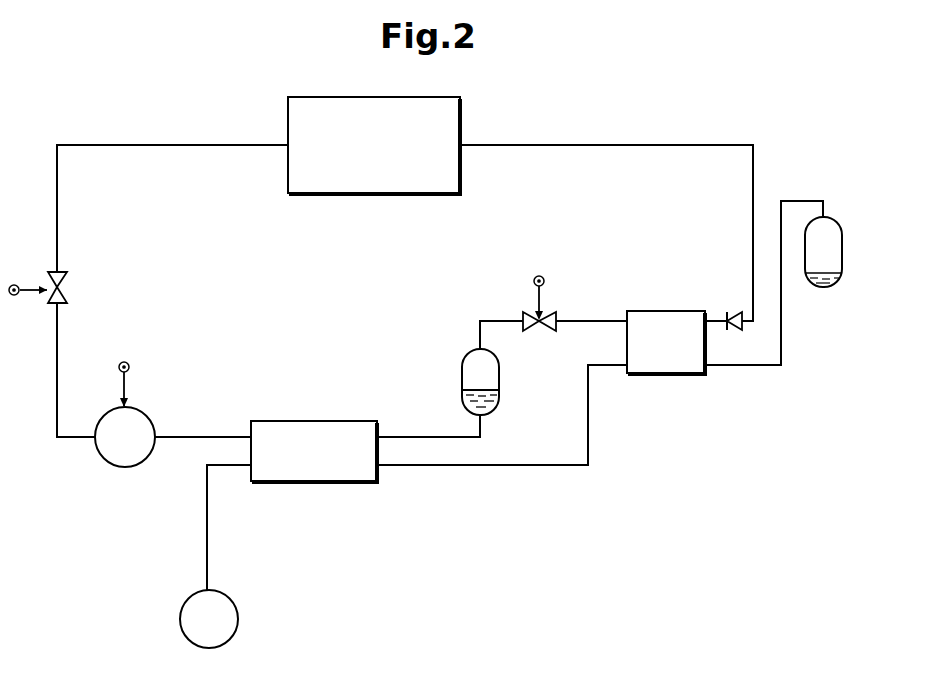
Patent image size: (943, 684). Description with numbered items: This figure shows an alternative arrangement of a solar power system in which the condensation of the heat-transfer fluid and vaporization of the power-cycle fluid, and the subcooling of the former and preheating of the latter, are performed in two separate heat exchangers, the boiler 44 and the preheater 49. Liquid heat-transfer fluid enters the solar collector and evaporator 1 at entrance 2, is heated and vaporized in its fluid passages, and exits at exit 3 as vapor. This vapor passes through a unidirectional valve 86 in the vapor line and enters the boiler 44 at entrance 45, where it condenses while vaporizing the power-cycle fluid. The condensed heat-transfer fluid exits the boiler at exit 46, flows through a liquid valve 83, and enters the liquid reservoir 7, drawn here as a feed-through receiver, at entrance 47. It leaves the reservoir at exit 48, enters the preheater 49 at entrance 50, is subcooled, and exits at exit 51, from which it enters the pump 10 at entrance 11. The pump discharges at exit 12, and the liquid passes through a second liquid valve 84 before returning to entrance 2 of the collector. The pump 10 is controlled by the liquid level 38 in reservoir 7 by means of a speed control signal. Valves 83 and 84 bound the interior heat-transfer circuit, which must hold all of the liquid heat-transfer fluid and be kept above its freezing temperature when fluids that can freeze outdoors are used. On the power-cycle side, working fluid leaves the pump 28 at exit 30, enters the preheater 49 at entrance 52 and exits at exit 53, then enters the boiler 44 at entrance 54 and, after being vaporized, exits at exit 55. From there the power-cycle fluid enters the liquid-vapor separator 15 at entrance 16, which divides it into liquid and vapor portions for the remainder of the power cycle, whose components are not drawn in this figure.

The solar collector and evaporator 1 is at (395, 113).
The entrance of collector and evaporator 2 is at (285, 143).
The exit of collector and evaporator 3 is at (462, 143).
The liquid reservoir 7 is at (463, 376).
The pump 10 is at (111, 464).
The pump entrance 11 is at (157, 445).
The pump exit 12 is at (94, 440).
The liquid-vapor separator 15 is at (832, 250).
The separator entrance 16 is at (826, 215).
The pump 28 is at (180, 620).
The pump exit 30 is at (205, 592).
The liquid level 38 is at (486, 391).
The boiler 44 is at (675, 374).
The boiler heat-transfer fluid entrance 45 is at (716, 300).
The boiler heat-transfer fluid exit 46 is at (626, 314).
The reservoir entrance 47 is at (478, 348).
The reservoir exit 48 is at (482, 418).
The preheater 49 is at (332, 420).
The preheater heat-transfer fluid entrance 50 is at (380, 436).
The preheater heat-transfer fluid exit 51 is at (250, 430).
The preheater power-cycle fluid entrance 52 is at (250, 470).
The preheater power-cycle fluid exit 53 is at (380, 465).
The boiler power-cycle fluid entrance 54 is at (626, 374).
The boiler power-cycle fluid exit 55 is at (708, 374).
The liquid valve 83 is at (547, 316).
The liquid valve 84 is at (60, 285).
The unidirectional valve 86 is at (740, 328).